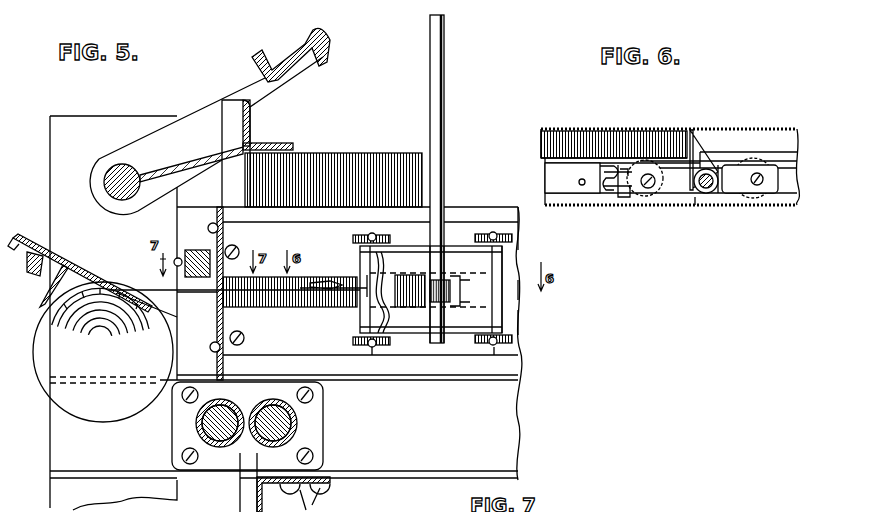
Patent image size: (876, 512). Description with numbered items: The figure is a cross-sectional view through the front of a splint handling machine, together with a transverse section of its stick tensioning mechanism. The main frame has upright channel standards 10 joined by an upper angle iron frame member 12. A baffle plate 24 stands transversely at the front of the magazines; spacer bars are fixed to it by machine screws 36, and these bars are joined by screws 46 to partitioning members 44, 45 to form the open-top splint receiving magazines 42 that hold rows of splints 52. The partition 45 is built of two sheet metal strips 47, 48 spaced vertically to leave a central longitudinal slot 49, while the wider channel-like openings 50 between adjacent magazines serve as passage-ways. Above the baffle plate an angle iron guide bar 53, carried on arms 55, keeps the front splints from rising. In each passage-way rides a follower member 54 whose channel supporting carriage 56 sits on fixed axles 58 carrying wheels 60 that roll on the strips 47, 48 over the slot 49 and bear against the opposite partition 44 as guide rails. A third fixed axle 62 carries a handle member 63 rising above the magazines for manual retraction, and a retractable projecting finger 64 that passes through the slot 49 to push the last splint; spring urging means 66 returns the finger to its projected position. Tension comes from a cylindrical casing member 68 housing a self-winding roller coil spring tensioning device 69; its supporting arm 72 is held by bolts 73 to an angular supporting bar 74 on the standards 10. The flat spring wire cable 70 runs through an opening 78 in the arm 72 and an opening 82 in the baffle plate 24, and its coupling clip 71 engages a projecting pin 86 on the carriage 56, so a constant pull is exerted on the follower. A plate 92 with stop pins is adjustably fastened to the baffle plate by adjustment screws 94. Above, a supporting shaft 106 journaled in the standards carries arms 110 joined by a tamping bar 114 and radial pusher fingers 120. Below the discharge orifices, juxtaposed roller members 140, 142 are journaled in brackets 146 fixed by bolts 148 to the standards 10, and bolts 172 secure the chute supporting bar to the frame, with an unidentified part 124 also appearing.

In FIG. 5, the upright supporting channel standards 10 is at (50, 116).
In FIG. 5, the upper angle iron frame member 12 is at (522, 418).
In FIG. 5, the baffle plate 24 is at (217, 320).
In FIG. 5, the machine screws 36 is at (209, 228).
In FIG. 6, the splint receiving magazines 42 is at (728, 140).
In FIG. 6, the partitioning member 44 is at (632, 129).
In FIG. 6, the partitioning member 45 is at (752, 152).
In FIG. 5, the screws 46 is at (240, 252).
In FIG. 5, the sheet metal strip 47 is at (522, 250).
In FIG. 5, the sheet metal strip 48 is at (522, 325).
In FIG. 5, the central longitudinal slot 49 is at (535, 298).
In FIG. 6, the channel-like openings 50 is at (793, 210).
In FIG. 5, the splint 52 is at (359, 160).
In FIG. 6, the splint 52 is at (575, 135).
In FIG. 5, the angle iron guide bar 53 is at (275, 144).
In FIG. 5, the follower member 54 is at (423, 345).
In FIG. 6, the follower member 54 is at (745, 200).
In FIG. 5, the arms 55 is at (232, 100).
In FIG. 5, the channel supporting carriage 56 is at (462, 330).
In FIG. 6, the channel supporting carriage 56 is at (696, 205).
In FIG. 5, the fixed axles 58 is at (372, 348).
In FIG. 6, the fixed axles 58 is at (662, 196).
In FIG. 5, the wheels 60 is at (353, 240).
In FIG. 6, the wheels 60 is at (646, 197).
In FIG. 5, the third fixed axle 62 is at (434, 318).
In FIG. 6, the third fixed axle 62 is at (720, 196).
In FIG. 5, the handle member 63 is at (446, 50).
In FIG. 5, the retractable projecting finger 64 is at (415, 278).
In FIG. 6, the retractable projecting finger 64 is at (700, 135).
In FIG. 5, the spring urging means 66 is at (455, 282).
In FIG. 6, the spring urging means 66 is at (705, 195).
In FIG. 5, the cylindrical casing member 68 is at (105, 405).
In FIG. 5, the self-winding circular roller coil spring tensioning device 69 is at (62, 330).
In FIG. 5, the flat spring wire cable 70 is at (135, 289).
In FIG. 6, the flat spring wire cable 70 is at (543, 168).
In FIG. 5, the coupling clip 71 is at (345, 282).
In FIG. 6, the coupling clip 71 is at (600, 196).
In FIG. 5, the supporting arm 72 is at (28, 245).
In FIG. 5, the bolts 73 is at (30, 271).
In FIG. 5, the angular supporting bar 74 is at (18, 238).
In FIG. 5, the opening 78 is at (110, 289).
In FIG. 5, the opening 82 is at (217, 298).
In FIG. 5, the projecting pin 86 is at (370, 316).
In FIG. 6, the projecting pin 86 is at (622, 200).
In FIG. 5, the plate 92 is at (198, 251).
In FIG. 5, the adjustment screws 94 is at (176, 260).
In FIG. 5, the supporting shaft 106 is at (106, 172).
In FIG. 5, the arms 110 is at (201, 108).
In FIG. 5, the tamping bar 114 is at (282, 50).
In FIG. 5, the pusher fingers 120 is at (178, 150).
In FIG. 5, the post 124 is at (240, 500).
In FIG. 5, the roller member 140 is at (226, 402).
In FIG. 5, the roller member 142 is at (278, 402).
In FIG. 5, the brackets 146 is at (323, 420).
In FIG. 5, the bolts 148 is at (313, 456).
In FIG. 5, the bolts 172 is at (300, 495).